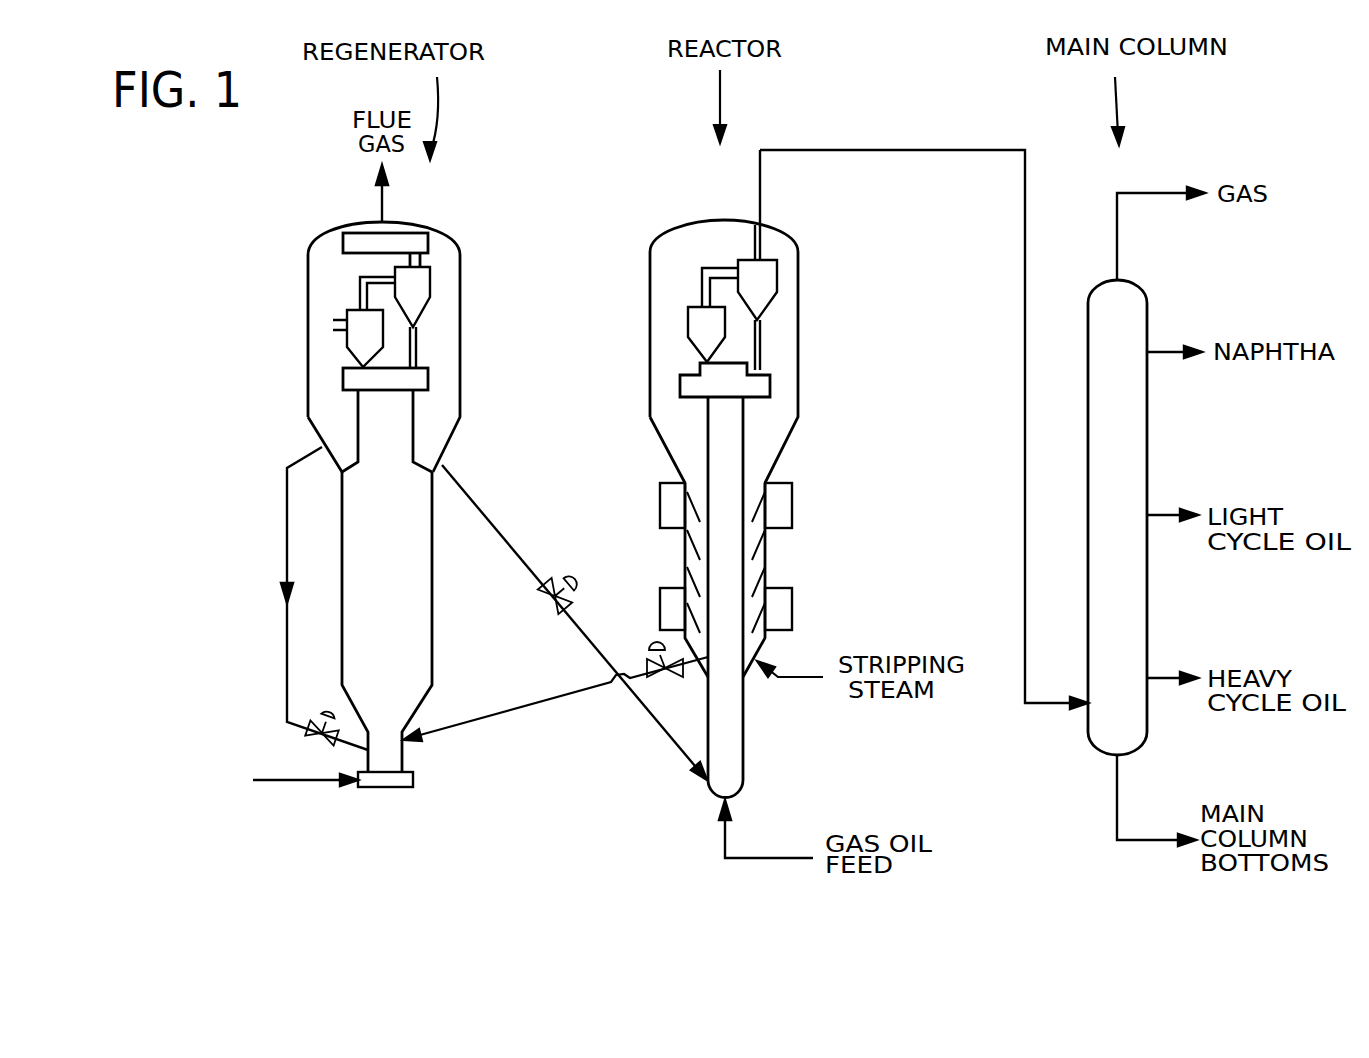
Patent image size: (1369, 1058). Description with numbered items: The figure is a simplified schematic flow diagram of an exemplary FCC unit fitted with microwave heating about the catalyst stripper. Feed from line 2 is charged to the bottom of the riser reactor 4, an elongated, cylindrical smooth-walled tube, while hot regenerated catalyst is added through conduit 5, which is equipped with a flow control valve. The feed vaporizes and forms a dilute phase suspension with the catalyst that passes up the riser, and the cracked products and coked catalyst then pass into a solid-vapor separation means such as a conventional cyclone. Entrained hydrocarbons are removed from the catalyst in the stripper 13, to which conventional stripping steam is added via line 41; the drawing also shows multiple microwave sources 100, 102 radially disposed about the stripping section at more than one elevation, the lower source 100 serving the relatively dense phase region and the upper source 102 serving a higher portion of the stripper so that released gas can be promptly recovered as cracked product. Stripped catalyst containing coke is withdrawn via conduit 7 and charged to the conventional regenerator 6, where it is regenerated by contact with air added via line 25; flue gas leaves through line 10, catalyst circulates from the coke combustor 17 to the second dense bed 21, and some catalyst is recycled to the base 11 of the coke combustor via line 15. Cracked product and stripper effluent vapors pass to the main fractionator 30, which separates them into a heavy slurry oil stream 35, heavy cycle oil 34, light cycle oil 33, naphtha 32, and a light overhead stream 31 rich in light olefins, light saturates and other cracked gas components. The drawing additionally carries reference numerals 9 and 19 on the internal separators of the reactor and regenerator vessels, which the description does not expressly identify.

The feed line 2 is at (753, 857).
The riser reactor 4 is at (743, 757).
The regenerated catalyst conduit 5 is at (662, 728).
The regenerator 6 is at (383, 497).
The stripped catalyst conduit 7 is at (477, 725).
The reactor cyclone separators 9 is at (688, 310).
The flue gas line 10 is at (382, 215).
The base of coke combustor 11 is at (403, 755).
The stripper 13 is at (728, 574).
The catalyst recycle line 15 is at (287, 527).
The coke combustor 17 is at (432, 613).
The regenerator cyclone separators 19 is at (358, 283).
The second dense bed 21 is at (460, 370).
The air line 25 is at (302, 780).
The main fractionator 30 is at (1147, 417).
The light overhead stream 31 is at (1150, 192).
The naphtha 32 is at (1160, 348).
The light cycle oil 33 is at (1157, 513).
The heavy cycle oil 34 is at (1157, 676).
The slurry oil stream 35 is at (1162, 844).
The stripping steam line 41 is at (782, 668).
The microwave source 100 is at (660, 610).
The microwave source 102 is at (660, 518).